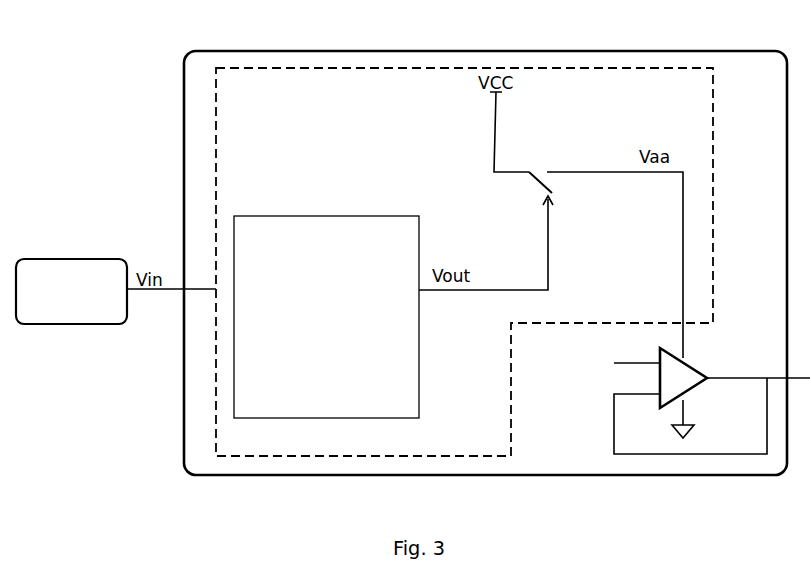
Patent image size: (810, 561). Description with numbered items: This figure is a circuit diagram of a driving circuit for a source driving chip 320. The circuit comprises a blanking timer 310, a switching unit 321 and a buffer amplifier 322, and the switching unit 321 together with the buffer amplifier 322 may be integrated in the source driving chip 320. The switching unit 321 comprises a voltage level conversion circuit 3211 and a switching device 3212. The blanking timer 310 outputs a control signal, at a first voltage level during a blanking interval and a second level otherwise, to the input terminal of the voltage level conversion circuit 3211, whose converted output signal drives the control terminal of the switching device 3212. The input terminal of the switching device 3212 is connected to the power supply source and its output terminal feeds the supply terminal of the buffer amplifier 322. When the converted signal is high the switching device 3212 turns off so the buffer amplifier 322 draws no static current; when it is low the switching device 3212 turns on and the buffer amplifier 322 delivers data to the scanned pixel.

The blanking timer 310 is at (72, 259).
The source driving chip 320 is at (516, 51).
The switching unit 321 is at (714, 152).
The voltage level conversion circuit 3211 is at (321, 216).
The switching device 3212 is at (542, 159).
The buffer amplifier 322 is at (690, 366).